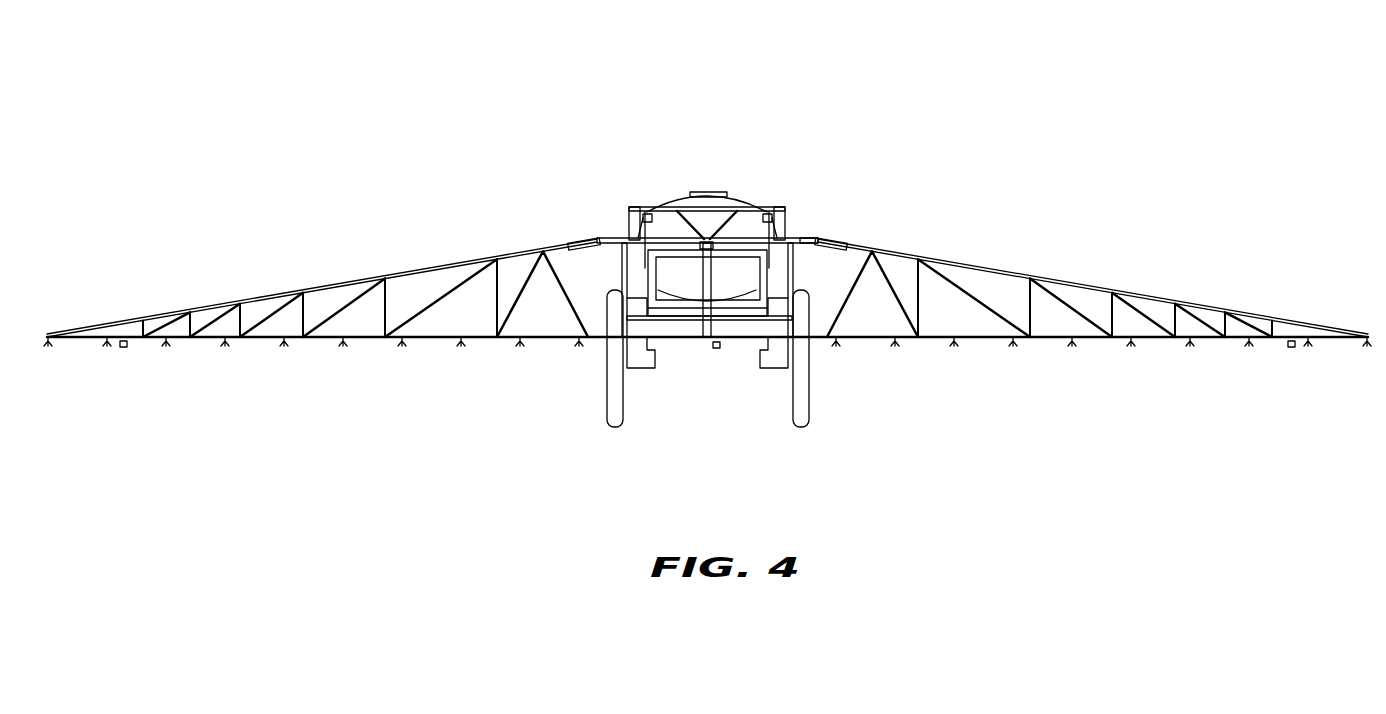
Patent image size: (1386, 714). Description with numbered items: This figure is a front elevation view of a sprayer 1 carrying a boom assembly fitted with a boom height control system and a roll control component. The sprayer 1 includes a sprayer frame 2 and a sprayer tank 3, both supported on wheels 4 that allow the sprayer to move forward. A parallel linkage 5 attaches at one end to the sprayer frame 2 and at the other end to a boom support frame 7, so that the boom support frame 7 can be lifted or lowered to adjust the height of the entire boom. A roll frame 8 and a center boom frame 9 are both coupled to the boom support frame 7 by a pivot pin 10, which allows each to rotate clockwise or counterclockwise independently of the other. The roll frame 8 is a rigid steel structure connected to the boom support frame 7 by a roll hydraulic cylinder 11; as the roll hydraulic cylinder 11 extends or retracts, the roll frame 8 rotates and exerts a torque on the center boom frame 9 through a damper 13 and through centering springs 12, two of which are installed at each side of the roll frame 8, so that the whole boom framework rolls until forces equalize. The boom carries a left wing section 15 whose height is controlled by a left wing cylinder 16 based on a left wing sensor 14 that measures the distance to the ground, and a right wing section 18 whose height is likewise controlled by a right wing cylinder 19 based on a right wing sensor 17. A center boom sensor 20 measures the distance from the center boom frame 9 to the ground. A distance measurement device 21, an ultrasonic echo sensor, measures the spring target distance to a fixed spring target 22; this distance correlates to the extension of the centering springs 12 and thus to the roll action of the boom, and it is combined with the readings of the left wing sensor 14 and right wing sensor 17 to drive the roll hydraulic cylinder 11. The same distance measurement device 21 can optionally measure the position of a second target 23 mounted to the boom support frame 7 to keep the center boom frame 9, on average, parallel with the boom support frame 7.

The sprayer 1 is at (755, 123).
The sprayer frame 2 is at (685, 303).
The sprayer tank 3 is at (700, 192).
The wheels 4 is at (612, 423).
The parallel linkage 5 is at (765, 368).
The boom support frame 7 is at (733, 320).
The roll frame 8 is at (800, 235).
The center boom frame 9 is at (840, 240).
The pivot pin 10 is at (707, 243).
The roll hydraulic cylinder 11 is at (776, 208).
The centering springs 12 is at (628, 226).
The damper 13 is at (641, 212).
The left wing sensor 14 is at (123, 348).
The left wing section 15 is at (438, 270).
The left wing cylinder 16 is at (585, 240).
The right wing sensor 17 is at (1292, 348).
The right wing section 18 is at (1048, 282).
The right wing cylinder 19 is at (833, 243).
The center boom sensor 20 is at (717, 348).
The distance measurement device 21 is at (652, 213).
The spring target 22 is at (704, 247).
The second target 23 is at (650, 318).